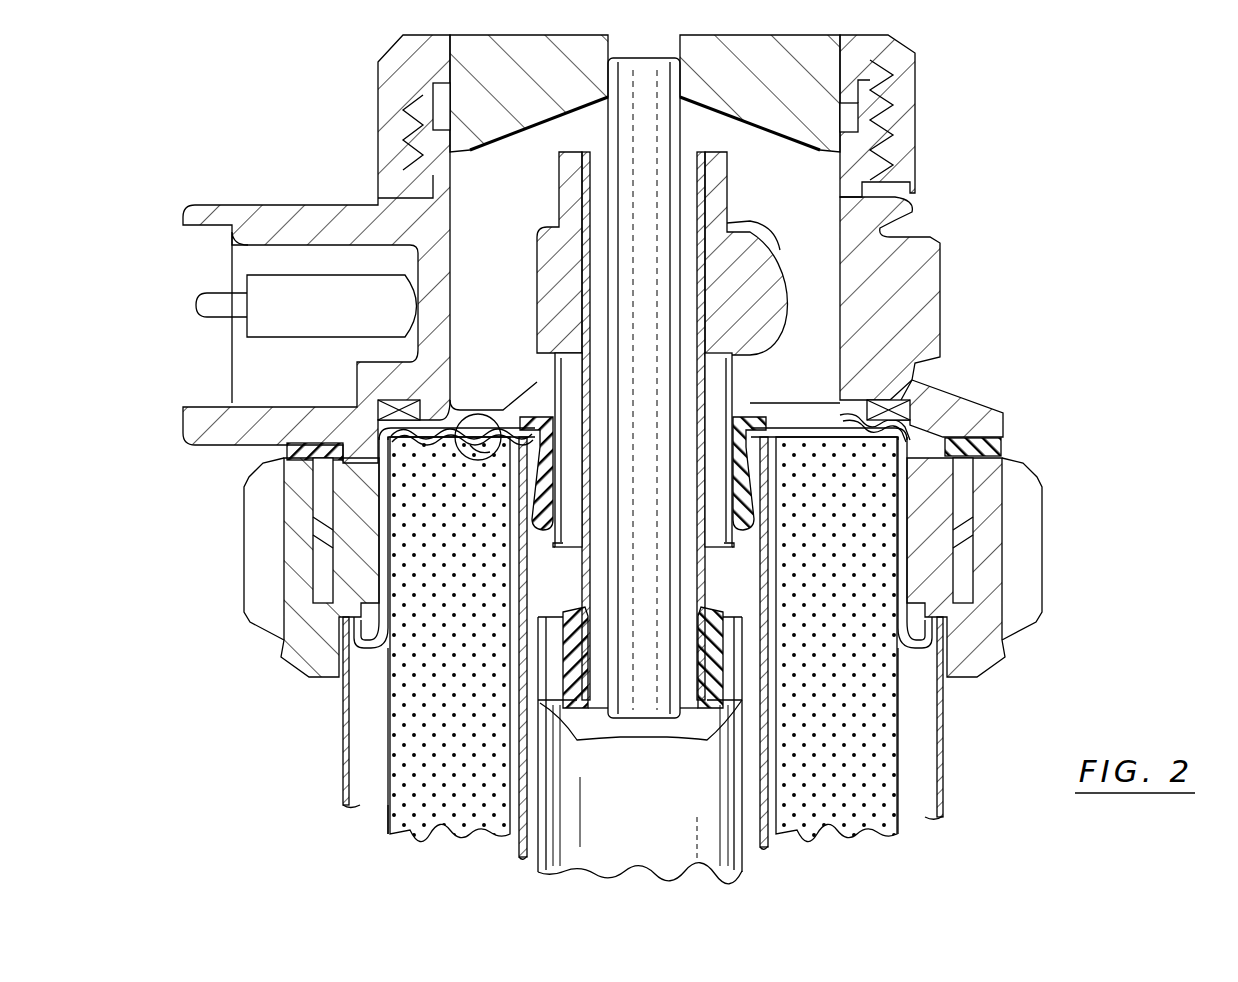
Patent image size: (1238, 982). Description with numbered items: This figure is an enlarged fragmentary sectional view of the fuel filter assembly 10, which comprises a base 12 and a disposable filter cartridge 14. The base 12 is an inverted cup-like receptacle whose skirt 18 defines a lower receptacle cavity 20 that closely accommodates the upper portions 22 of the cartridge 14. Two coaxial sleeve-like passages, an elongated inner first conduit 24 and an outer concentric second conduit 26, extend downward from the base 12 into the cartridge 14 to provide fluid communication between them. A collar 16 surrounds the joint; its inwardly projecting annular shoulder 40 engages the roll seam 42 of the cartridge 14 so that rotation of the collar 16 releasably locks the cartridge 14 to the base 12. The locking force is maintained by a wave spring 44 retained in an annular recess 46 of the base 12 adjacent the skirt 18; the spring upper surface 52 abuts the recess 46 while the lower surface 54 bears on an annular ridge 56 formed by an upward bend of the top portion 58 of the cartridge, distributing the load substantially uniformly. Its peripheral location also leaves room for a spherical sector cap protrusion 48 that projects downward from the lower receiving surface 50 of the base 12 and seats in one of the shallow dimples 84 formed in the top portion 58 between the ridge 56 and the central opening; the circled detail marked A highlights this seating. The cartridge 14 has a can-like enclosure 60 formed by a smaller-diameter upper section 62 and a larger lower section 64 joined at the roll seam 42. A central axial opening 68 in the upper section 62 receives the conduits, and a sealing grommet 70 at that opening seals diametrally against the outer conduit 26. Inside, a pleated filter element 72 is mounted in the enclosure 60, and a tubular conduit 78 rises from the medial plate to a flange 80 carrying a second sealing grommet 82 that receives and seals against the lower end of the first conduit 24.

The fuel filter assembly 10 is at (644, 459).
The base 12 is at (940, 274).
The disposable filter cartridge 14 is at (946, 738).
The collar 16 is at (1030, 492).
The skirt 18 is at (917, 540).
The lower receptacle cavity 20 is at (905, 595).
The upper portions 22 is at (390, 517).
The first conduit 24 is at (713, 712).
The second conduit 26 is at (760, 357).
The annular shoulder 40 is at (960, 650).
The roll seam 42 is at (953, 604).
The spring 44 is at (885, 425).
The annular recess 46 is at (887, 400).
The protrusion 48 is at (483, 432).
The lower receiving surface 50 is at (877, 440).
The upper surface 52 is at (912, 383).
The lower surface 54 is at (988, 432).
The annular ridge 56 is at (397, 447).
The top portion 58 is at (830, 440).
The enclosure 60 is at (343, 757).
The upper section 62 is at (386, 573).
The lower section 64 is at (343, 780).
The central axial opening 68 is at (548, 424).
The sealing grommet 70 is at (754, 518).
The filter element 72 is at (857, 820).
The tubular conduit 78 is at (622, 827).
The flange 80 is at (550, 617).
The second sealing grommet 82 is at (577, 667).
The dimples 84 is at (490, 452).
The region A is at (464, 413).